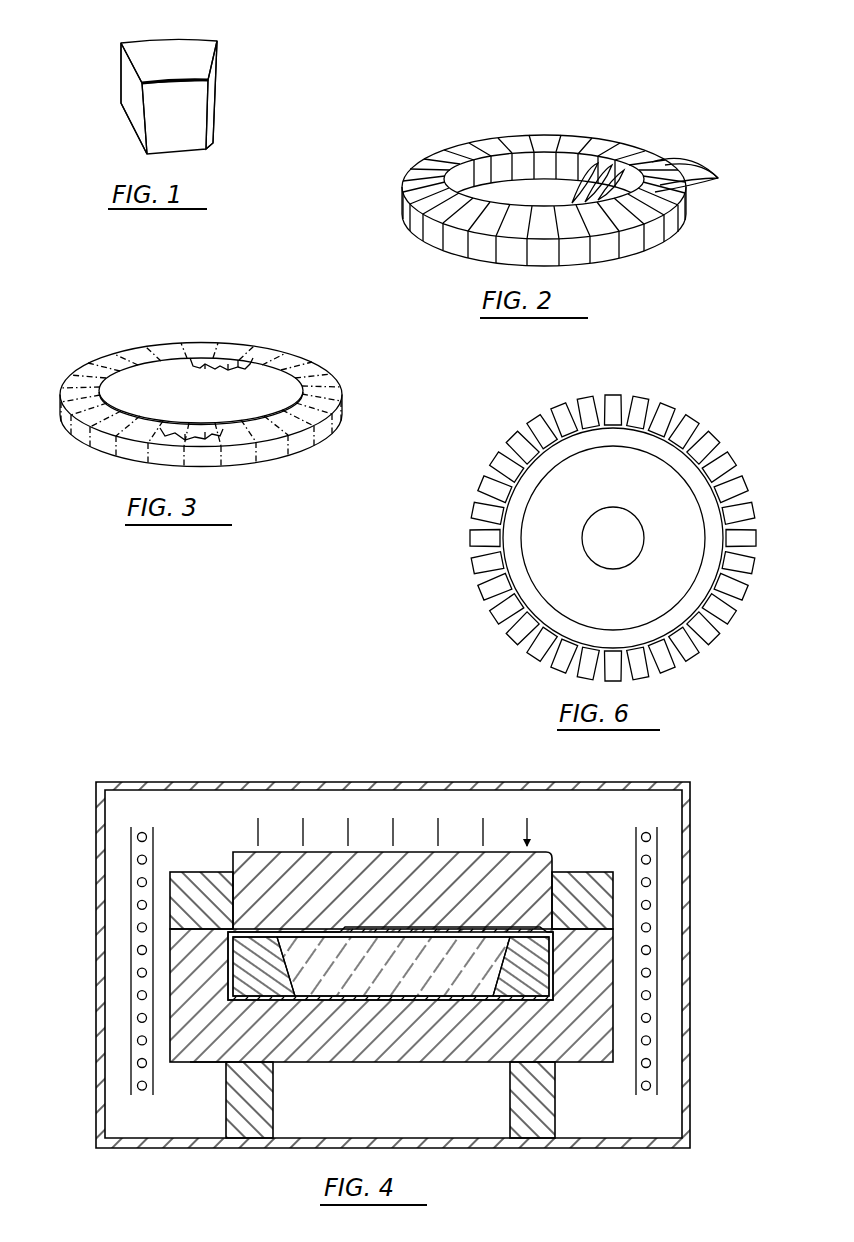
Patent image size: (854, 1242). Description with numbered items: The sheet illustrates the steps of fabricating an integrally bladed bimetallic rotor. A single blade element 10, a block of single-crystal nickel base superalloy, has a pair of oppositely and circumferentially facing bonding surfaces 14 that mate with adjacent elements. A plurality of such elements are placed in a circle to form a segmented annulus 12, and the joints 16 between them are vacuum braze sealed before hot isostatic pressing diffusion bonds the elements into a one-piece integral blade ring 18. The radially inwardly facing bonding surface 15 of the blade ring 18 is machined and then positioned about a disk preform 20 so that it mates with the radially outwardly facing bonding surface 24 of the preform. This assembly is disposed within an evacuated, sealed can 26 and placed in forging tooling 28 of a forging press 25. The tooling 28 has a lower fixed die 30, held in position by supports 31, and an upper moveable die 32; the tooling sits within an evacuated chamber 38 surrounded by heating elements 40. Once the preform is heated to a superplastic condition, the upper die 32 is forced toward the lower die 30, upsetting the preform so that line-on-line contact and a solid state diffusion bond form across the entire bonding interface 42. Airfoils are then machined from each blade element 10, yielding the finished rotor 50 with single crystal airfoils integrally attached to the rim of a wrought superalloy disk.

In FIG. 1, the blade element 10 is at (164, 77).
In FIG. 2, the blade element 10 is at (504, 133).
In FIG. 2, the segmented annulus 12 is at (566, 182).
In FIG. 1, the bonding surfaces 14 is at (128, 78).
In FIG. 3, the radially inwardly facing bonding surface 15 is at (230, 344).
In FIG. 2, the joints 16 is at (700, 178).
In FIG. 3, the integral blade ring 18 is at (130, 352).
In FIG. 4, the integral blade ring 18 is at (525, 981).
In FIG. 3, the disk preform 20 is at (285, 388).
In FIG. 4, the disk preform 20 is at (452, 975).
In FIG. 3, the radially outwardly facing bonding surface 24 is at (201, 428).
In FIG. 4, the forging press 25 is at (390, 935).
In FIG. 4, the can 26 is at (433, 927).
In FIG. 4, the forging tooling 28 is at (192, 1066).
In FIG. 4, the lower fixed die 30 is at (413, 1059).
In FIG. 4, the supports 31 is at (271, 1108).
In FIG. 4, the upper moveable die 32 is at (358, 897).
In FIG. 4, the chamber 38 is at (115, 1058).
In FIG. 4, the heating elements 40 is at (130, 895).
In FIG. 4, the bonding interface 42 is at (288, 963).
In FIG. 6, the finished rotor 50 is at (693, 394).